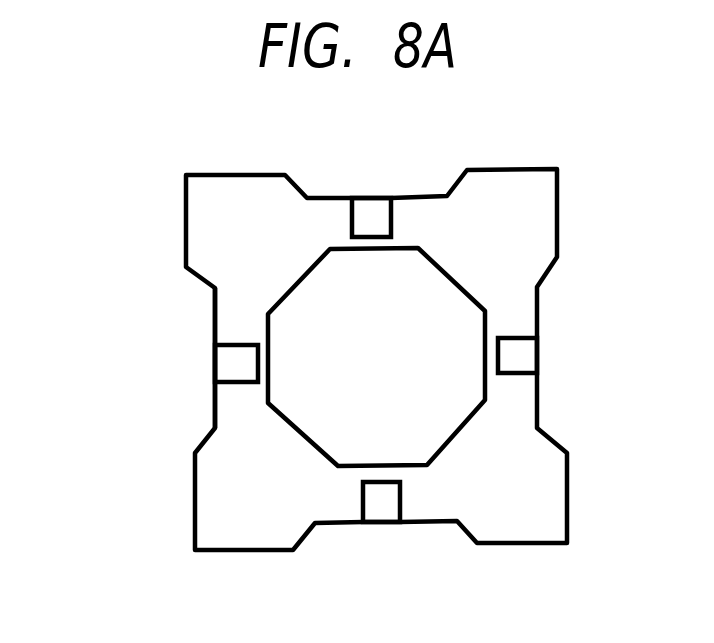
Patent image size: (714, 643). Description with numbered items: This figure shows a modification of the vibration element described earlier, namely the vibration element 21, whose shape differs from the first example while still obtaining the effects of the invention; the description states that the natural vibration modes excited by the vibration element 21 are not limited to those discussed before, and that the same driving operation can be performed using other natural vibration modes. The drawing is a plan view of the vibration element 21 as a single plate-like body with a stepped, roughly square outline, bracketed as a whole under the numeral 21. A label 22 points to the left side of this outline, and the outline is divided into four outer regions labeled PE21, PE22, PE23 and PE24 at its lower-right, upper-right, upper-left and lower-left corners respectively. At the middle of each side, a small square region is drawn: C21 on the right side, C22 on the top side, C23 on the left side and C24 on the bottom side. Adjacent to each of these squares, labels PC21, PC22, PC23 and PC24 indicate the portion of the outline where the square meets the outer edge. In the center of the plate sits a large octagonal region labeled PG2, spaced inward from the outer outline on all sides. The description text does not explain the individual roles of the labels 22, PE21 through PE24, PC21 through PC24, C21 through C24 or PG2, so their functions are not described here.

The vibration element 21 is at (97, 582).
The electrode 22 is at (240, 303).
The electrode portion PE21 is at (537, 512).
The electrode portion PE22 is at (530, 177).
The electrode portion PE23 is at (202, 198).
The electrode portion PE24 is at (247, 535).
The connection pad PC21 is at (540, 363).
The connection pad PC22 is at (378, 196).
The connection pad PC23 is at (220, 360).
The connection pad PC24 is at (377, 522).
The contact hole C21 is at (527, 348).
The contact hole C22 is at (367, 202).
The contact hole C23 is at (228, 370).
The contact hole C24 is at (388, 512).
The octagonal electrode pattern PG2 is at (453, 295).